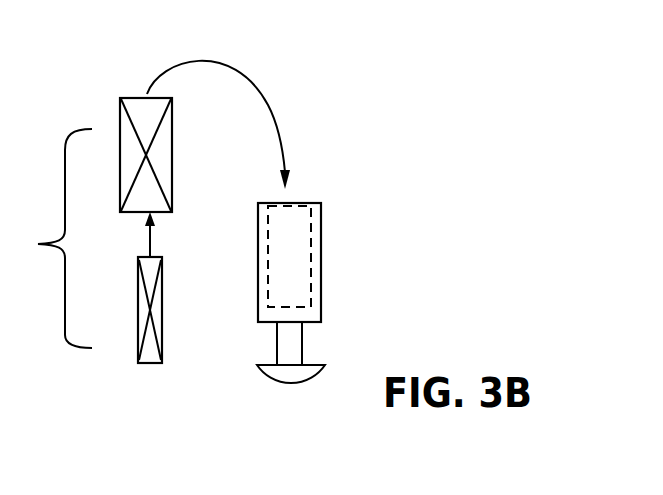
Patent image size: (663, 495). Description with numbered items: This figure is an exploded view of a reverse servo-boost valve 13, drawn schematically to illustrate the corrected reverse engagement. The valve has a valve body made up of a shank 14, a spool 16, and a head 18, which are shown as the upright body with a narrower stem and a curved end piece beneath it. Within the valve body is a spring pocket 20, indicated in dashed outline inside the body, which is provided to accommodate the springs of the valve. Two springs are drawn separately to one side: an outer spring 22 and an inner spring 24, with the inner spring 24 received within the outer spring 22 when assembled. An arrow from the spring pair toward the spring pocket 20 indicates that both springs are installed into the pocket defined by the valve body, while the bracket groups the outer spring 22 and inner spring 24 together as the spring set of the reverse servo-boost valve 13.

The reverse servo-boost valve 13 is at (335, 210).
The shank 14 is at (321, 277).
The spool 16 is at (277, 340).
The head 18 is at (285, 383).
The spring pocket 20 is at (300, 263).
The outer spring 22 is at (172, 182).
The inner spring 24 is at (162, 318).